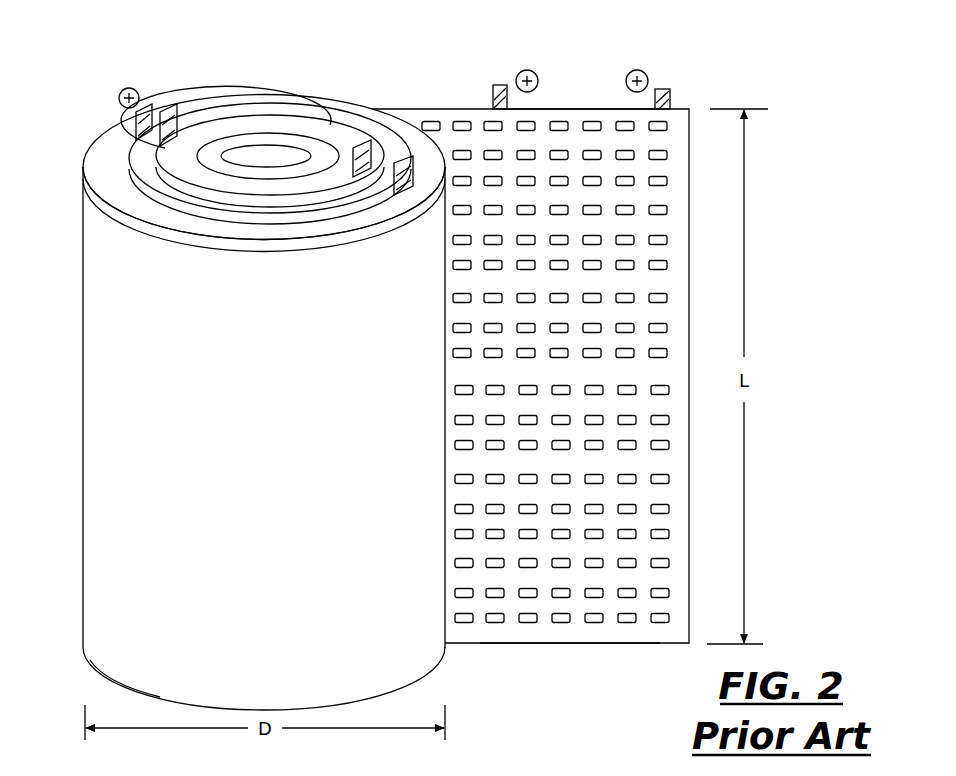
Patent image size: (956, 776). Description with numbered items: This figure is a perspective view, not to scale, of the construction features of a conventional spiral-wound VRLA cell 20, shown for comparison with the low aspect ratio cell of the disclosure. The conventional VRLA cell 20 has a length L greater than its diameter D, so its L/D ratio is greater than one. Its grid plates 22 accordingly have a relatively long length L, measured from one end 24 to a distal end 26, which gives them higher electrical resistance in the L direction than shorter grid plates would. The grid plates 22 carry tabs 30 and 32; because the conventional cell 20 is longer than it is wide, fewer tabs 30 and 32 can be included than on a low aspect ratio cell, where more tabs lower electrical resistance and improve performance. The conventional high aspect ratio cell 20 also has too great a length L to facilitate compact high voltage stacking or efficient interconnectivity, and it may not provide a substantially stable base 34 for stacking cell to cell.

The conventional VRLA cell 20 is at (284, 400).
The grid plates 22 is at (691, 277).
The end 24 is at (572, 108).
The distal end 26 is at (563, 646).
The tabs 30 is at (405, 160).
The tabs 32 is at (170, 106).
The base 34 is at (128, 677).